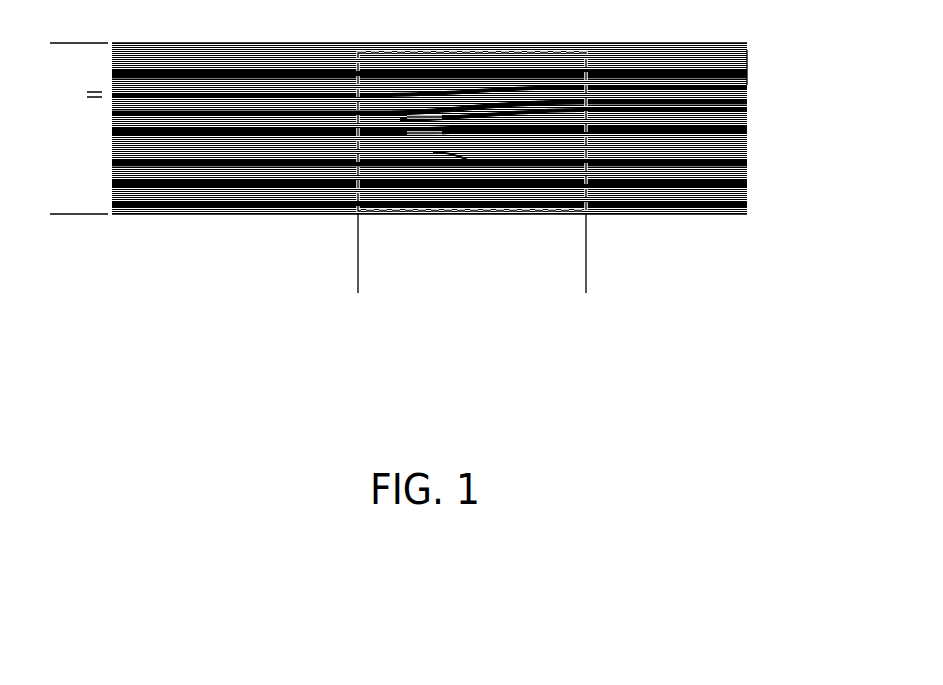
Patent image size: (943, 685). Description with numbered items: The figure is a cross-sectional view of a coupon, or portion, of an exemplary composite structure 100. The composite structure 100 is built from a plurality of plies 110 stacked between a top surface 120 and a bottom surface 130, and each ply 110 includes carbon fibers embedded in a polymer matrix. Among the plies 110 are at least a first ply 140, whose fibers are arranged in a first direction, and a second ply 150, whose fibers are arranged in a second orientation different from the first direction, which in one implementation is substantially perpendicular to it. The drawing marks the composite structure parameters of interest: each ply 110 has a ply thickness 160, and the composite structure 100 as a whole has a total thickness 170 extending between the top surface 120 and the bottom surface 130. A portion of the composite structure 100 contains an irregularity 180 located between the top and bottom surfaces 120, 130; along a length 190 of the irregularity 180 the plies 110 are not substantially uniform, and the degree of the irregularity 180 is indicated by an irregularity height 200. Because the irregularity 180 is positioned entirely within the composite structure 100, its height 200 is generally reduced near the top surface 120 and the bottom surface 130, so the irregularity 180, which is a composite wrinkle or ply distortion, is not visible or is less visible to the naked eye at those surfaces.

The composite structure 100 is at (681, 233).
The plies 110 is at (753, 75).
The top surface 120 is at (708, 38).
The bottom surface 130 is at (155, 223).
The first ply 140 is at (748, 101).
The second ply 150 is at (748, 110).
The ply thickness 160 is at (426, 85).
The total thickness 170 is at (58, 214).
The irregularity 180 is at (502, 110).
The length of irregularity 190 is at (586, 285).
The irregularity height 200 is at (433, 152).